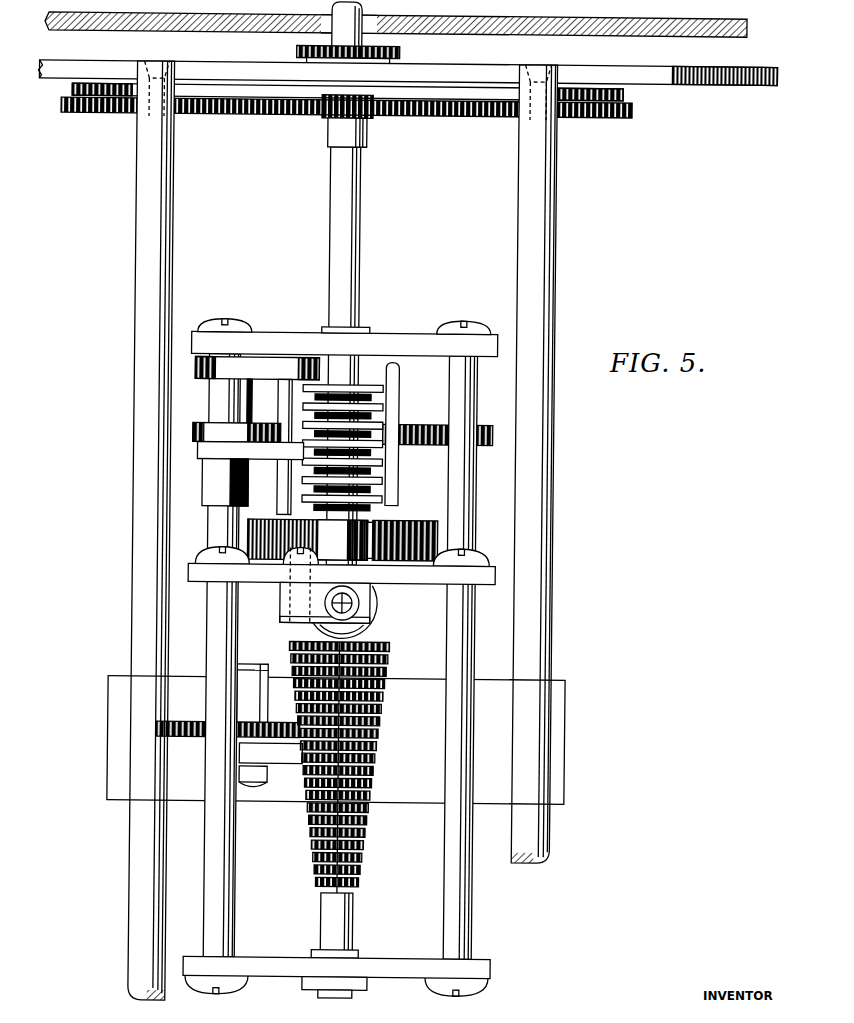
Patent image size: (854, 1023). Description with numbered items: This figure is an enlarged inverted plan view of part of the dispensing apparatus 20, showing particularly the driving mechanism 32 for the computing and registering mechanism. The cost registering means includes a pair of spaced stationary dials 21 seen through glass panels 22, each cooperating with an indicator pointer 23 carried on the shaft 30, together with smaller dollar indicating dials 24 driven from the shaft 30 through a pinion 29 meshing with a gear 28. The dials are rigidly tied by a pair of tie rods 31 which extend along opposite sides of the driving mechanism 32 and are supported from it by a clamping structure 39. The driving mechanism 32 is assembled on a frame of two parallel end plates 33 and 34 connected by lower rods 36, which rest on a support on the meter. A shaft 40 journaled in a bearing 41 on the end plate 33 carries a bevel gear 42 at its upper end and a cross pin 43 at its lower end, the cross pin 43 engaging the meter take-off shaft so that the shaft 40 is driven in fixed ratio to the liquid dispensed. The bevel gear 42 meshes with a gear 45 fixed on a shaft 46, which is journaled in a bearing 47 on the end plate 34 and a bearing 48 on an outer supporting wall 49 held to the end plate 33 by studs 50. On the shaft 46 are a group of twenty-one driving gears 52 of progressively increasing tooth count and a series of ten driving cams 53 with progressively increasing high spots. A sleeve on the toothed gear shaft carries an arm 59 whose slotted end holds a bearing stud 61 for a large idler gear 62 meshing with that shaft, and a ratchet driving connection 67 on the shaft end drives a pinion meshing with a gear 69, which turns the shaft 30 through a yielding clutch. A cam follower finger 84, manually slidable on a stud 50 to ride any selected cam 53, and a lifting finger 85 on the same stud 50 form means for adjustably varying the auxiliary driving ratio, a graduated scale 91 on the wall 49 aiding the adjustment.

The mechanism 20 is at (374, 823).
The dial 21 is at (663, 62).
The glass panel 22 is at (243, 34).
The indicator pointer 23 is at (398, 58).
The dollar indicating dial 24 is at (622, 93).
The gear 28 is at (597, 117).
The pinion 29 is at (330, 125).
The shaft 30 is at (330, 176).
The tie rod 31 is at (134, 298).
The driving mechanism 32 is at (300, 887).
The end plate 33 is at (406, 583).
The end plate 34 is at (388, 978).
The lower rod 36 is at (239, 863).
The clamping structure 39 is at (571, 681).
The shaft 40 is at (361, 612).
The bearing 41 is at (283, 620).
The bevel gear 42 is at (373, 628).
The cross pin 43 is at (333, 603).
The gear 45 is at (375, 562).
The shaft 46 is at (325, 527).
The bearing 47 is at (361, 952).
The bearing 48 is at (326, 327).
The outer supporting wall 49 is at (272, 333).
The stud 50 is at (218, 320).
The driving gear 52 is at (386, 745).
The driving cam 53 is at (385, 472).
The arm 59 is at (286, 766).
The bearing stud 61 is at (238, 664).
The idler gear 62 is at (188, 700).
The ratchet driving connection 67 is at (441, 540).
The gear 69 is at (430, 424).
The cam follower finger 84 is at (264, 454).
The lifting finger 85 is at (270, 379).
The scale 91 is at (389, 362).